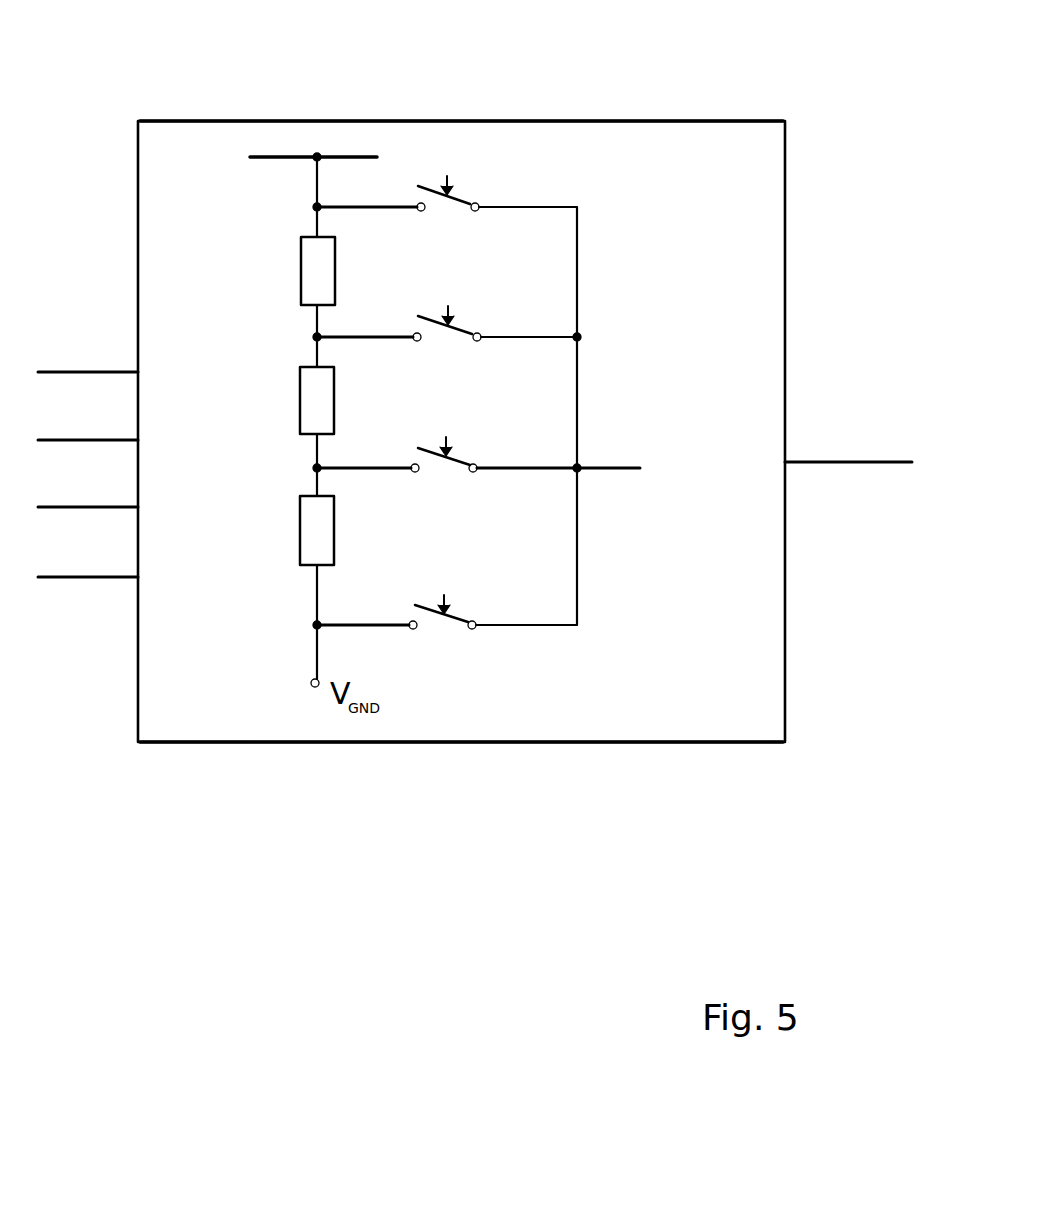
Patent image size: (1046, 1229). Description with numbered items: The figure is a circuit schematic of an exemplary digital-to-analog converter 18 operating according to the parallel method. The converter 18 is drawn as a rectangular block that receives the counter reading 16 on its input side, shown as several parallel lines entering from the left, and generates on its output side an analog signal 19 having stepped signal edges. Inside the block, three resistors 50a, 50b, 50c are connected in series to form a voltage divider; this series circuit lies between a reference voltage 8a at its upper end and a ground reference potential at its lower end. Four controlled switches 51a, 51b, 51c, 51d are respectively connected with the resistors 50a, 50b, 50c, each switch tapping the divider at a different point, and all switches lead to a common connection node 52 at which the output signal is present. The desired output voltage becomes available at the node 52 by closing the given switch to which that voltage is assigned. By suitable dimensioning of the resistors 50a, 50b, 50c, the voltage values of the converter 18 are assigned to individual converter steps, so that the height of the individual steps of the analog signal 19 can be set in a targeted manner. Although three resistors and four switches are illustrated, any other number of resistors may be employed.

The reference voltage 8a is at (258, 158).
The counter reading 16 is at (72, 578).
The converter 18 is at (758, 121).
The analog signal 19 is at (848, 442).
The resistor 50a is at (287, 271).
The resistor 50b is at (288, 400).
The resistor 50c is at (288, 530).
The switch 51a is at (447, 182).
The switch 51b is at (447, 313).
The switch 51c is at (447, 444).
The switch 51d is at (447, 602).
The connection node 52 is at (582, 477).